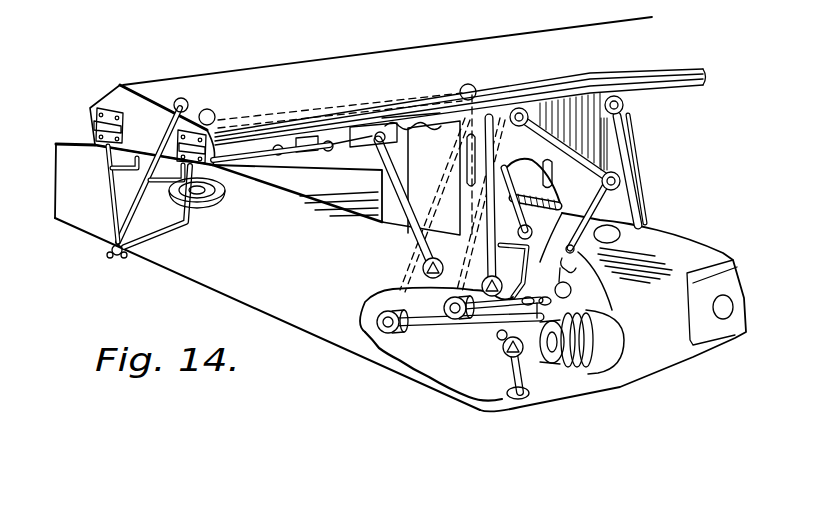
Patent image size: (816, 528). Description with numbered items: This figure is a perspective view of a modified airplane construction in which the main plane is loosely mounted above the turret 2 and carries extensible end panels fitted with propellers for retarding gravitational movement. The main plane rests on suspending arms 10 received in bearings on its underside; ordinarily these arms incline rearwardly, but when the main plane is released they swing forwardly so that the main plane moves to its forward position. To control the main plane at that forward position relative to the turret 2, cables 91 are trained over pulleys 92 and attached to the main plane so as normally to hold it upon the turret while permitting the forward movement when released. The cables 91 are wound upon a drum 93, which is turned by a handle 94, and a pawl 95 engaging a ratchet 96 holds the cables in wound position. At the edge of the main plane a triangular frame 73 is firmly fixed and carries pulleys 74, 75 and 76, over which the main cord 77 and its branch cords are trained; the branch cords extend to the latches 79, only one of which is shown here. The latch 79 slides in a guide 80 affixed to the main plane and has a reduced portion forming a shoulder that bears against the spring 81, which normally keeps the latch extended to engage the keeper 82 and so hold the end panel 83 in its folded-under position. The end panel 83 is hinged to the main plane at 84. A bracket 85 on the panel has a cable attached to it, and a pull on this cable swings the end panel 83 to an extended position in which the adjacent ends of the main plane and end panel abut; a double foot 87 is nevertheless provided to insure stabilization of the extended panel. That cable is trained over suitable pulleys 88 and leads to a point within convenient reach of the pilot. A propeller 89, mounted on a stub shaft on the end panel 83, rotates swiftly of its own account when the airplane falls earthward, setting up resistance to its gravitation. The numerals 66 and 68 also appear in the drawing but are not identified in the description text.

The turret 2 is at (467, 178).
The suspending arms 10 is at (395, 185).
The foot 66 is at (117, 226).
The cable 68 is at (218, 110).
The triangular frame 73 is at (618, 142).
The pulley 74 is at (620, 180).
The pulley 75 is at (523, 107).
The pulley 76 is at (453, 120).
The main cord 77 is at (590, 210).
The latch 79 is at (327, 142).
The guide 80 is at (387, 142).
The spring 81 is at (378, 132).
The keeper 82 is at (301, 142).
The end panel 83 is at (247, 163).
The hinge 84 is at (97, 130).
The bracket 85 is at (160, 228).
The double foot 87 is at (110, 178).
The pulleys 88 is at (178, 99).
The propeller 89 is at (200, 205).
The cables 91 is at (446, 303).
The pulleys 92 is at (378, 320).
The drum 93 is at (585, 350).
The handle 94 is at (510, 373).
The pawl 95 is at (496, 339).
The ratchet 96 is at (538, 318).